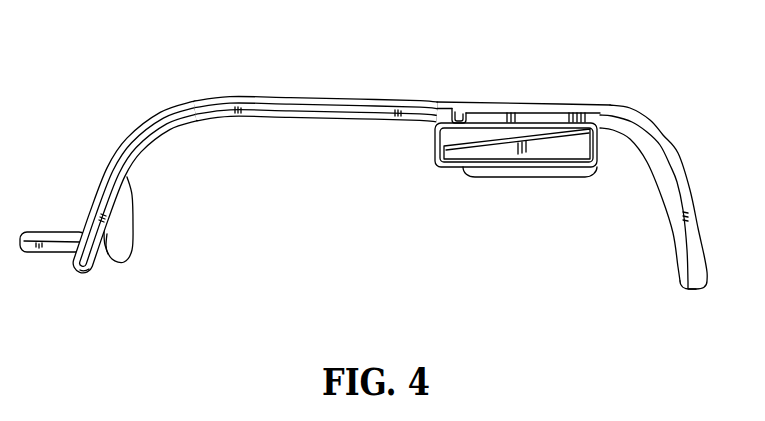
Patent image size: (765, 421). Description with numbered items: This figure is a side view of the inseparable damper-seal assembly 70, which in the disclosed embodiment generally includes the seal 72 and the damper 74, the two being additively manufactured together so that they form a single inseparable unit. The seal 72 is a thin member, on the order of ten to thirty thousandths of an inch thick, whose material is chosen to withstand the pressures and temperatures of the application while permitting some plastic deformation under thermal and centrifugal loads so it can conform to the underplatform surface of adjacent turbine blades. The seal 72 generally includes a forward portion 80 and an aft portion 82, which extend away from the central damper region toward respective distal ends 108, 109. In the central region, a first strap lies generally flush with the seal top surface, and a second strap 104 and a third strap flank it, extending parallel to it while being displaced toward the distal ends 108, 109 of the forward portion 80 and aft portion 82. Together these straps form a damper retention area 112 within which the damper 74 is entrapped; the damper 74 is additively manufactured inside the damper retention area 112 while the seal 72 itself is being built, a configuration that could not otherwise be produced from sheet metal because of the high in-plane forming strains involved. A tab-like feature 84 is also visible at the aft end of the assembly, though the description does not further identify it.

The inseparable damper-seal assembly 70 is at (378, 188).
The seal 72 is at (335, 78).
The damper 74 is at (563, 152).
The forward portion 80 is at (650, 213).
The aft portion 82 is at (89, 155).
The tab 84 is at (43, 233).
The second strap 104 is at (505, 178).
The distal end 108 is at (693, 290).
The distal end 109 is at (82, 272).
The damper retention area 112 is at (462, 107).